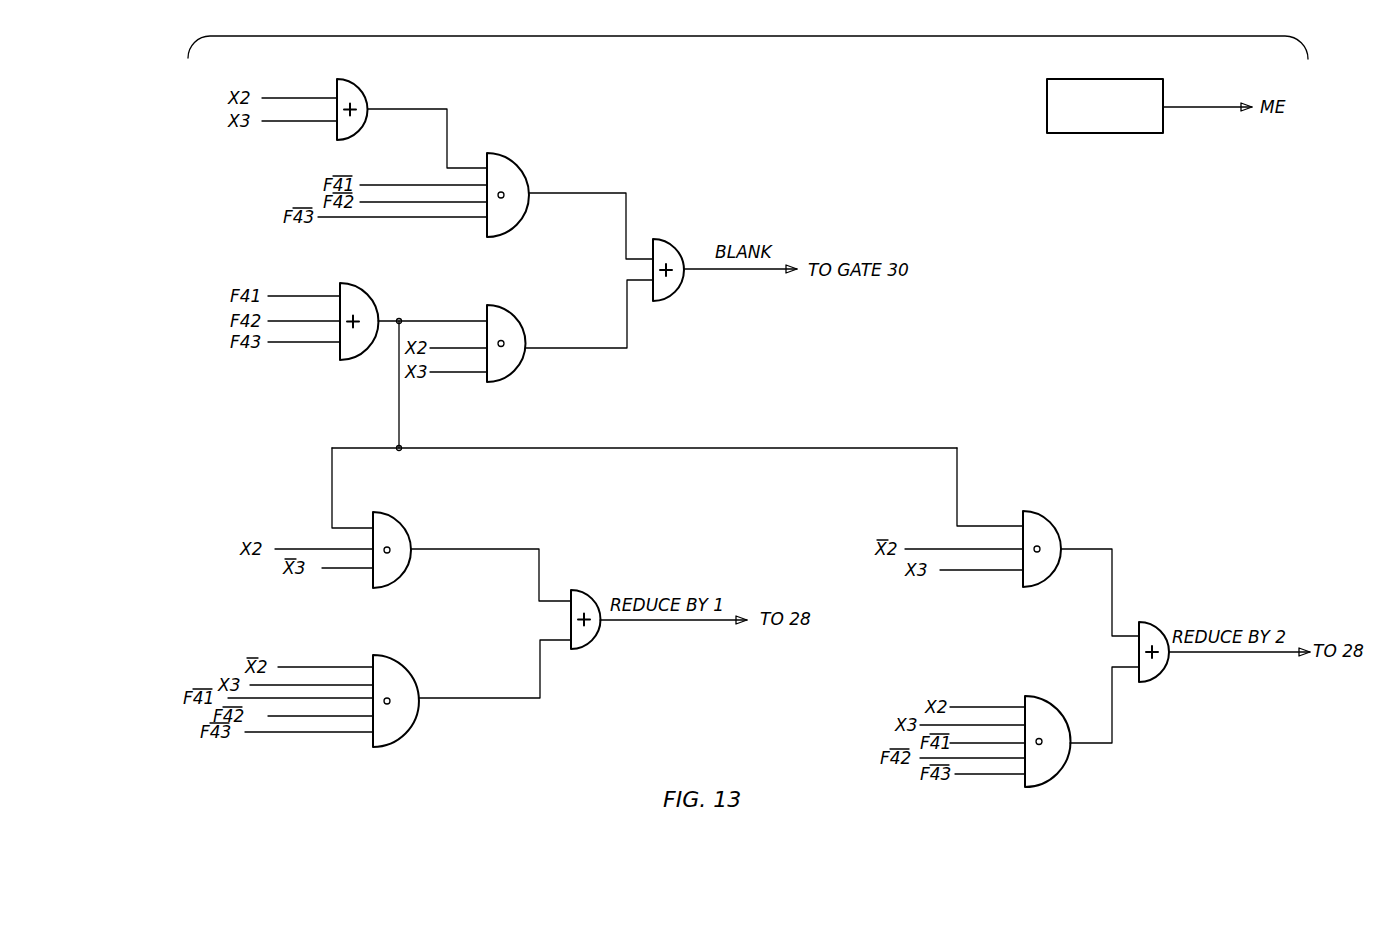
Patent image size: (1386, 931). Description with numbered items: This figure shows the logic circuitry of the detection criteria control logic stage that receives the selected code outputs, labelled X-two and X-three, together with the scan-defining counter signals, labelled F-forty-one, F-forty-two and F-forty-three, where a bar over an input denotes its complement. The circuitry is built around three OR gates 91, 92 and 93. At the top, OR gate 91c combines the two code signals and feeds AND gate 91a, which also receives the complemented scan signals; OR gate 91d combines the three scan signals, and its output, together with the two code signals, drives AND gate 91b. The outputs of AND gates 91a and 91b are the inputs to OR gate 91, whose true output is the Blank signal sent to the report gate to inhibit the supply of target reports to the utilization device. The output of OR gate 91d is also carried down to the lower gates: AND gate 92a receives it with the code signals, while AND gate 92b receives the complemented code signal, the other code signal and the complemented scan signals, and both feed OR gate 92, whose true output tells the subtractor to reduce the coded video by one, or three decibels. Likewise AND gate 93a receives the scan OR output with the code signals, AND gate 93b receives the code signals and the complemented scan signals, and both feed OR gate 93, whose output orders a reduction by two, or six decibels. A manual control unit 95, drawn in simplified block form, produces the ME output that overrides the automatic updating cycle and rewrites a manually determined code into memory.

The OR gate 91c is at (357, 87).
The AND gate 91a is at (513, 172).
The OR gate 91 is at (667, 247).
The OR gate 91d is at (363, 292).
The AND gate 91b is at (512, 320).
The AND gate 92a is at (402, 527).
The AND gate 92b is at (397, 670).
The OR gate 92 is at (585, 600).
The AND gate 93a is at (1045, 518).
The AND gate 93b is at (1042, 710).
The OR gate 93 is at (1150, 633).
The manual control unit 95 is at (1137, 83).